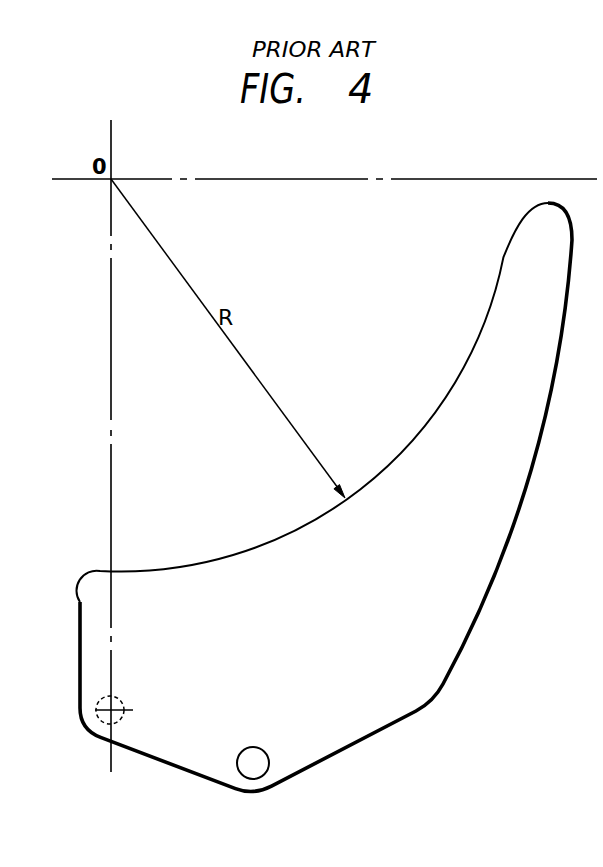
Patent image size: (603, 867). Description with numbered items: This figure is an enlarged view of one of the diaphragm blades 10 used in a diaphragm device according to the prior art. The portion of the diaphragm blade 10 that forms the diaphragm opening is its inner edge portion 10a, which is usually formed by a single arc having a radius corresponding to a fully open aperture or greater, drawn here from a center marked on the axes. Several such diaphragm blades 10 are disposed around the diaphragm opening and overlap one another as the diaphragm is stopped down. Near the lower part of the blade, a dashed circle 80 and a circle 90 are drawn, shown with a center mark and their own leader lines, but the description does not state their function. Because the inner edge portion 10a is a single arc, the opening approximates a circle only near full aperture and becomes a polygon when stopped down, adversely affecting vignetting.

The diaphragm blade 10 is at (385, 712).
The inner edge portion 10a is at (235, 553).
The pivot hole 80 is at (103, 716).
The mounting hole 90 is at (243, 766).